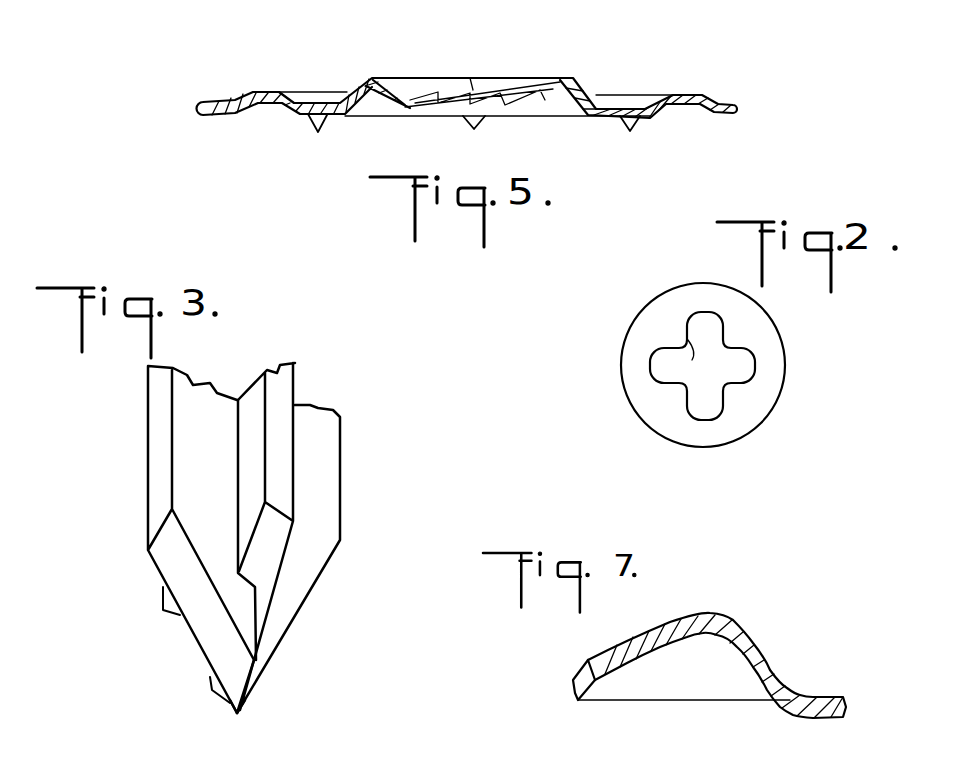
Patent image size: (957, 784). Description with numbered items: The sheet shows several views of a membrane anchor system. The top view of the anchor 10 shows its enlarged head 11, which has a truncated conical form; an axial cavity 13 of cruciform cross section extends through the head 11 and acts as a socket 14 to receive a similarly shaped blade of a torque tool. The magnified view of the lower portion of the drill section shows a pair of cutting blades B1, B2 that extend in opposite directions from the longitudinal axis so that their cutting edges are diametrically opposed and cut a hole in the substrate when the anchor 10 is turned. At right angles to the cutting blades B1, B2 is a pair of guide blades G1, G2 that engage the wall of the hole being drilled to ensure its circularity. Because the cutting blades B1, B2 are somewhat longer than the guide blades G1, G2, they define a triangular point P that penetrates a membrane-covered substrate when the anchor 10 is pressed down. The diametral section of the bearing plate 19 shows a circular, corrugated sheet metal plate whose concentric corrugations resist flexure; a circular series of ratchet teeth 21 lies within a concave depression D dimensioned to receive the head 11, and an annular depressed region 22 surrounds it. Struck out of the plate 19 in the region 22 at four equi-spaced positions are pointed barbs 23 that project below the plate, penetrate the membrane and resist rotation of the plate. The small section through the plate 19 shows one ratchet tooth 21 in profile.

In FIG. 2, the anchor 10 is at (623, 318).
In FIG. 2, the enlarged head 11 is at (786, 380).
In FIG. 2, the axial cavity 13 is at (688, 340).
In FIG. 2, the socket 14 is at (742, 352).
In FIG. 7, the bearing plate 19 is at (833, 697).
In FIG. 5, the ratchet teeth 21 is at (480, 97).
In FIG. 7, the ratchet teeth 21 is at (582, 678).
In FIG. 5, the annular depressed region 22 is at (310, 112).
In FIG. 5, the pointed prongs or barbs 23 is at (643, 153).
In FIG. 5, the concave depression D is at (403, 80).
In FIG. 3, the cutting blade B1 is at (325, 508).
In FIG. 3, the cutting blade B2 is at (155, 490).
In FIG. 3, the guide blade G1 is at (278, 393).
In FIG. 3, the guide blade G2 is at (167, 612).
In FIG. 3, the triangular point P is at (237, 713).